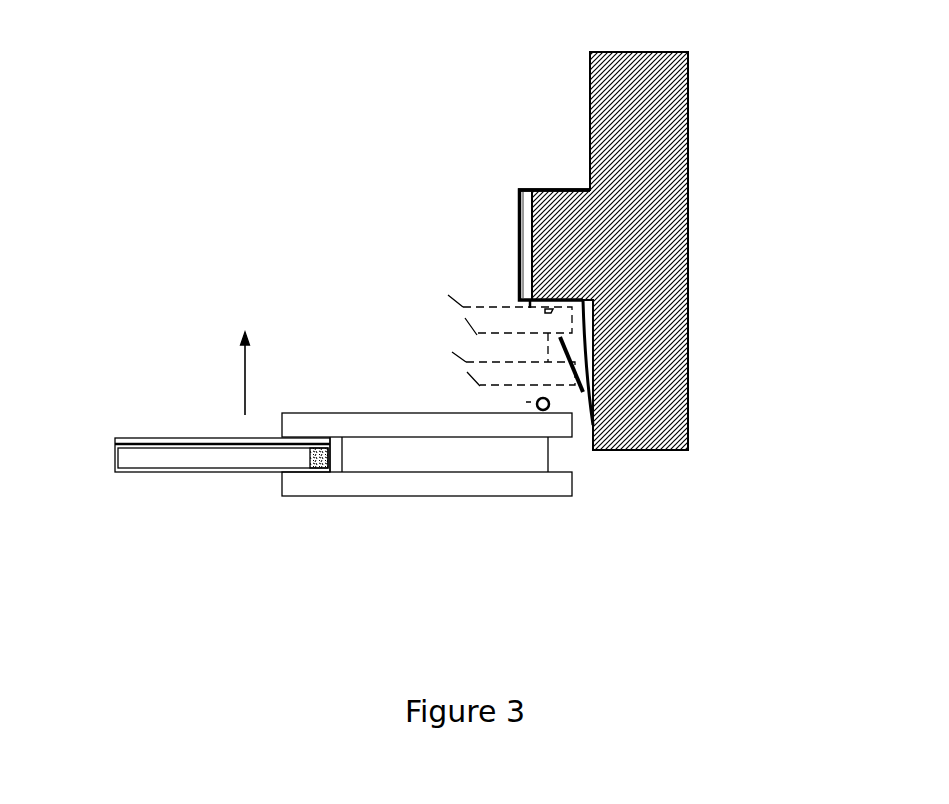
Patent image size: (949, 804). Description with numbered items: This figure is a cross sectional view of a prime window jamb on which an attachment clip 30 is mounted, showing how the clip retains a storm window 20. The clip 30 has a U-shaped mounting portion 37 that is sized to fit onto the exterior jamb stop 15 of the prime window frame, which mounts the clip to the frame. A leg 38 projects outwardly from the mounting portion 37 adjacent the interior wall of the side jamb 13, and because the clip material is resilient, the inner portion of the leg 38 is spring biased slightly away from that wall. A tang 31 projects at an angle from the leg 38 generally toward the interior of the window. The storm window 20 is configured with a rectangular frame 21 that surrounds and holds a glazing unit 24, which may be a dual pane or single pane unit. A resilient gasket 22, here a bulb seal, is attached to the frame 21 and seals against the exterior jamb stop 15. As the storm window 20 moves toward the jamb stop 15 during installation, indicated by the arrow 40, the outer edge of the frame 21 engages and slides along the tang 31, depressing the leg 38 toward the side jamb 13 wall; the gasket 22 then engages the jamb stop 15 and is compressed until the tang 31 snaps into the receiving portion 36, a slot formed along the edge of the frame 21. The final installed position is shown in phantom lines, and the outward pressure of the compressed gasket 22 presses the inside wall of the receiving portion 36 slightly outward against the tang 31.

The side jamb 13 is at (688, 308).
The clip 30 is at (545, 180).
The U-shaped mounting portion 37 is at (518, 225).
The exterior jamb stop 15 is at (532, 258).
The leg 38 is at (593, 327).
The tang 31 is at (575, 375).
The storm window 20 is at (312, 503).
The frame 21 is at (390, 495).
The glazing unit 24 is at (160, 468).
The gasket 22 is at (538, 408).
The receiving portion 36 is at (573, 460).
The direction of movement 40 is at (215, 372).